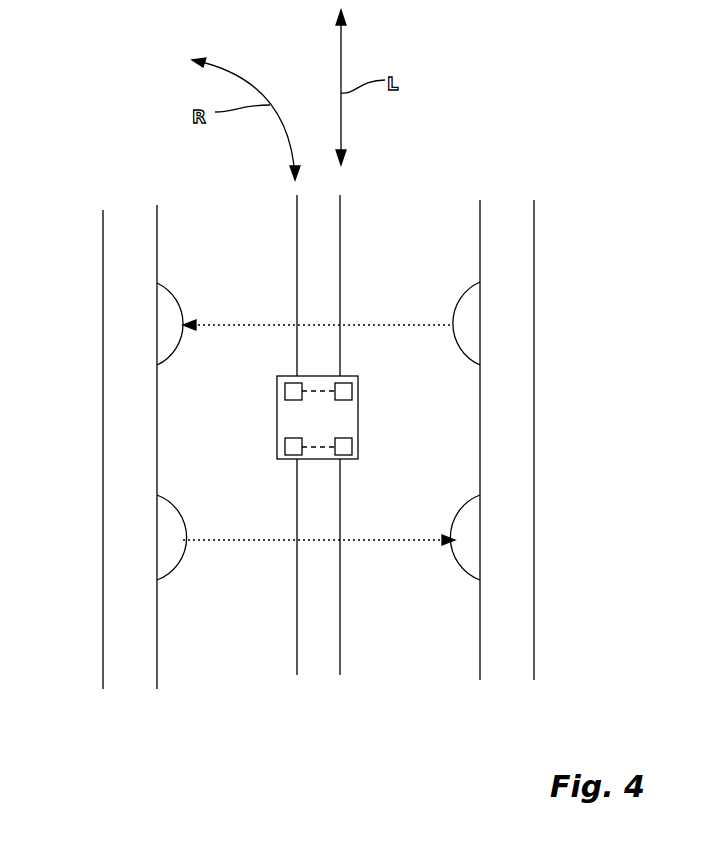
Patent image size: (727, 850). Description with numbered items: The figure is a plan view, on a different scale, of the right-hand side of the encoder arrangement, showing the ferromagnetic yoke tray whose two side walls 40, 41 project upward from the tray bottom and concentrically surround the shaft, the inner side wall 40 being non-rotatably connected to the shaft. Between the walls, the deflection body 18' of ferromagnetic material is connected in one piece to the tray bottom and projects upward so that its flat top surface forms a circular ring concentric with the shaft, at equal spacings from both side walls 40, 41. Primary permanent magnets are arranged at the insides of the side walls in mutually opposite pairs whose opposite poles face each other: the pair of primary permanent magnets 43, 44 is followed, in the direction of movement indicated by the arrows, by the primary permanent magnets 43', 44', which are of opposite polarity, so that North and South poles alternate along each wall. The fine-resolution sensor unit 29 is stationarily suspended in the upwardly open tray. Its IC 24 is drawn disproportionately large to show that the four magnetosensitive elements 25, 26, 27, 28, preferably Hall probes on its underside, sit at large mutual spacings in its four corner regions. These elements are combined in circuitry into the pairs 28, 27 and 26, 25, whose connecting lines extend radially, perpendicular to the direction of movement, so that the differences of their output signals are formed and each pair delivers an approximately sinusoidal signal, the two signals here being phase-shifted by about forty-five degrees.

The deflection body 18' is at (351, 435).
The IC 24 is at (347, 421).
The magnetosensitive element 25 is at (290, 445).
The magnetosensitive element 26 is at (347, 443).
The magnetosensitive element 27 is at (290, 391).
The magnetosensitive element 28 is at (347, 392).
The fine-resolution sensor unit 29 is at (250, 430).
The inner side wall 40 is at (120, 472).
The outer side wall 41 is at (510, 472).
The primary permanent magnet 43 is at (187, 550).
The primary permanent magnet 43' is at (441, 321).
The primary permanent magnet 44 is at (441, 550).
The primary permanent magnet 44' is at (189, 321).